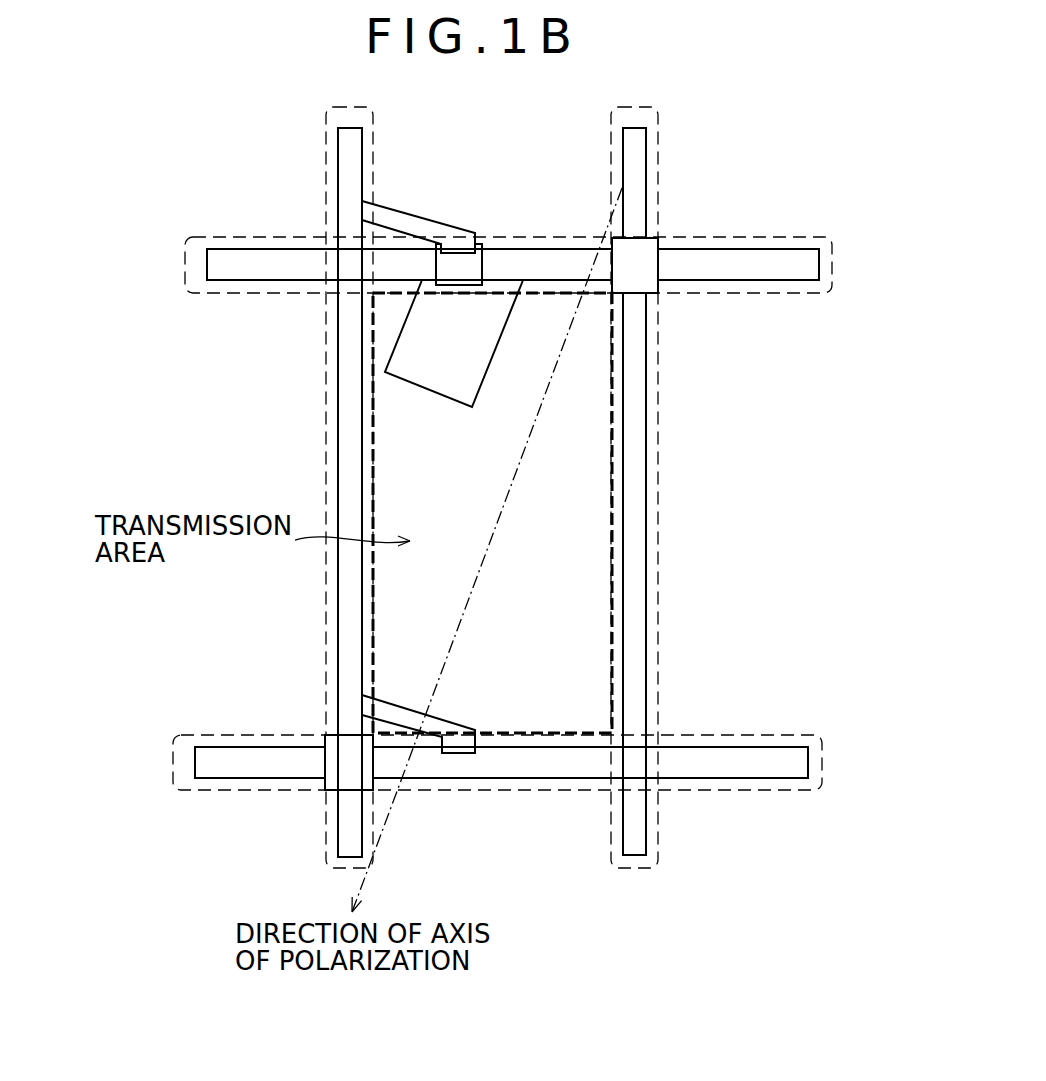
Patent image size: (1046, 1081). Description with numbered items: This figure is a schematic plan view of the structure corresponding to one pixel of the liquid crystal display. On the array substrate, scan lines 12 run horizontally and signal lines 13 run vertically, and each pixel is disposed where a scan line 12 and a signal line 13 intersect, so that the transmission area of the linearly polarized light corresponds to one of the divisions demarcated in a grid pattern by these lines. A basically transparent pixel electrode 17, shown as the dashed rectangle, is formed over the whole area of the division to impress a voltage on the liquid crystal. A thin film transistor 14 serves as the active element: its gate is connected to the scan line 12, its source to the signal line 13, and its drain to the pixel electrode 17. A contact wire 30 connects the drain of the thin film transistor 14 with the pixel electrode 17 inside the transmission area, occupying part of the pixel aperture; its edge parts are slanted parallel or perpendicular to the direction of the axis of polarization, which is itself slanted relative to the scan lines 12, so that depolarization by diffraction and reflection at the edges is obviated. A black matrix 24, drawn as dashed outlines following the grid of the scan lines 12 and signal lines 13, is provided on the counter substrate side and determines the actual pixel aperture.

The scan line 12 is at (735, 249).
The signal line 13 is at (362, 148).
The thin film transistor 14 is at (488, 265).
The pixel electrode 17 is at (575, 587).
The black matrix 24 is at (658, 125).
The contact wire 30 is at (428, 393).